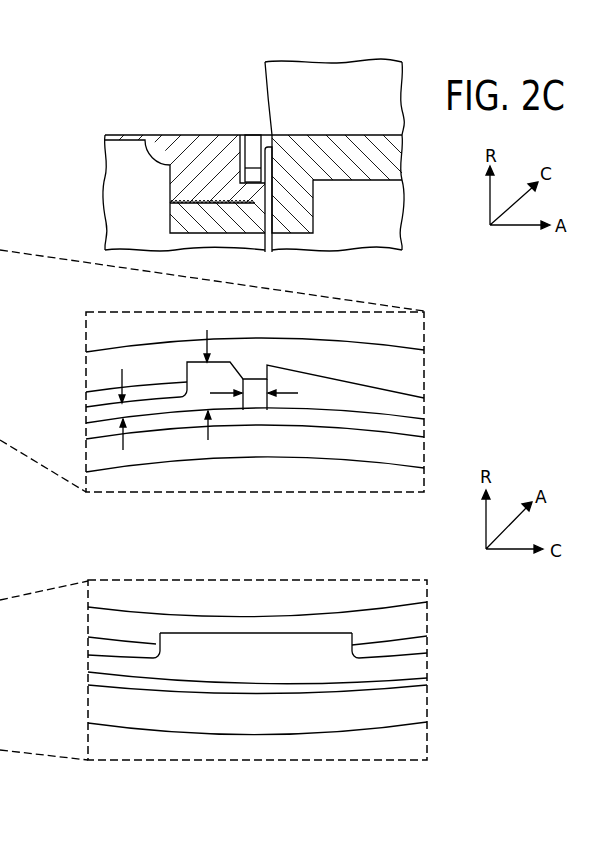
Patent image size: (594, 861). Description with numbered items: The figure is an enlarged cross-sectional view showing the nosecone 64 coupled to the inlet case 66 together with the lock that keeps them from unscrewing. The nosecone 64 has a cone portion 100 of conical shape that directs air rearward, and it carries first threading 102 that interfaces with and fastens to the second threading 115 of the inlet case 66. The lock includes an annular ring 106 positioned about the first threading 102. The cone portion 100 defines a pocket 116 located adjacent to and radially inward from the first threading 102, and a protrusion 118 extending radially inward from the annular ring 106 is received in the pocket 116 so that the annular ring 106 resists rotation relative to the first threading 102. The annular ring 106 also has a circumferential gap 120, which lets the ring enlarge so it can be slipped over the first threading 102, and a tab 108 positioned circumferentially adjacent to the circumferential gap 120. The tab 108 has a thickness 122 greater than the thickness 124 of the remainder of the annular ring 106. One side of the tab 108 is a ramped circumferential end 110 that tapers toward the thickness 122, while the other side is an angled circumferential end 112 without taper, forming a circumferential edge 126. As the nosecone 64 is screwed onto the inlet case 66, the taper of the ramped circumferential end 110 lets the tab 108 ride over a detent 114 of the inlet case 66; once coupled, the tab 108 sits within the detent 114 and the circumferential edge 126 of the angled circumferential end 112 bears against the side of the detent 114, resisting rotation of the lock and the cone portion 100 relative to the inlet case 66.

The nosecone 64 is at (170, 147).
The inlet case 66 is at (308, 142).
The first threading 102 is at (230, 202).
The tab 108 is at (253, 147).
The detent 114 is at (262, 140).
The second threading 115 is at (262, 207).
The cone portion 100 is at (97, 360).
The annular ring 106 is at (417, 409).
The ramped circumferential end 110 is at (237, 377).
The angled circumferential end 112 is at (185, 363).
The pocket 116 is at (155, 645).
The protrusion 118 is at (260, 648).
The circumferential gap 120 is at (285, 392).
The thickness 122 is at (208, 440).
The thickness 124 is at (122, 382).
The circumferential edge 126 is at (185, 373).